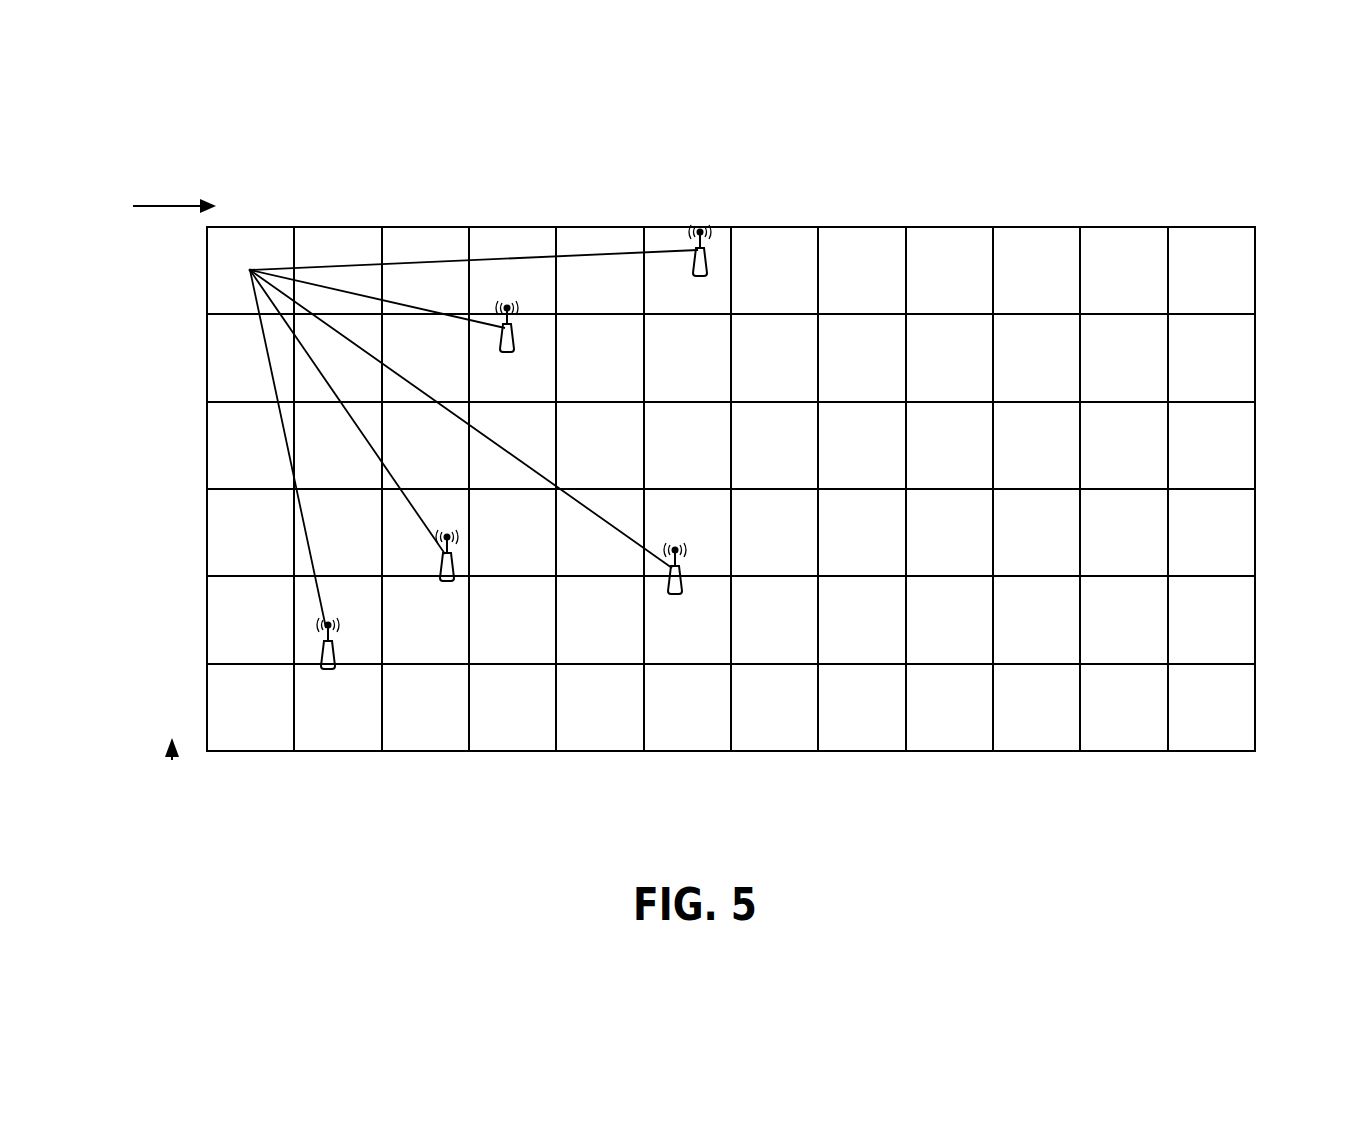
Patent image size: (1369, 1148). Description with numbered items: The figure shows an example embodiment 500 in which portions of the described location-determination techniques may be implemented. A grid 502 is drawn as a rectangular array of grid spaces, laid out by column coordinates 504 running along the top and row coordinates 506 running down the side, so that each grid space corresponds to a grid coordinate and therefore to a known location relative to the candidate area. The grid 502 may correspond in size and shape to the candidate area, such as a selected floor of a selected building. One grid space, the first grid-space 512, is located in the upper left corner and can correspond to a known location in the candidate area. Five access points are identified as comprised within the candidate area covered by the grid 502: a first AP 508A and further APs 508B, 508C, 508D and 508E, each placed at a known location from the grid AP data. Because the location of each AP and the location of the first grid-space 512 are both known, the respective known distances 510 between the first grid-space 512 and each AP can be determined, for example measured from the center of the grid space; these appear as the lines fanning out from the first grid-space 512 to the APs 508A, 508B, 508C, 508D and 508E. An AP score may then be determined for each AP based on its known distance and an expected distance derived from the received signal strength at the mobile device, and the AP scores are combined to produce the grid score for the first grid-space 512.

The example embodiment 500 is at (152, 112).
The grid 502 is at (783, 489).
The column coordinates 504 is at (151, 206).
The row coordinates 506 is at (172, 757).
The first AP 508A is at (754, 265).
The AP 508B is at (560, 341).
The AP 508C is at (727, 587).
The AP 508D is at (454, 572).
The AP 508E is at (379, 657).
The known distances 510 is at (465, 431).
The first grid-space 512 is at (189, 295).